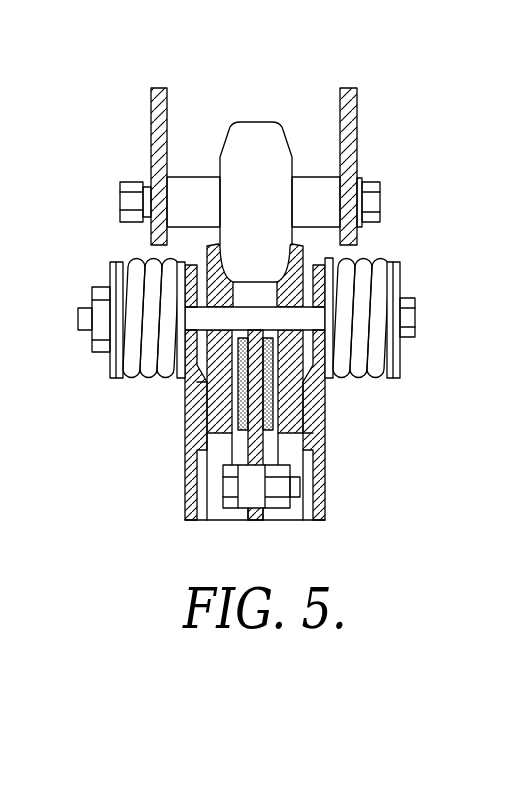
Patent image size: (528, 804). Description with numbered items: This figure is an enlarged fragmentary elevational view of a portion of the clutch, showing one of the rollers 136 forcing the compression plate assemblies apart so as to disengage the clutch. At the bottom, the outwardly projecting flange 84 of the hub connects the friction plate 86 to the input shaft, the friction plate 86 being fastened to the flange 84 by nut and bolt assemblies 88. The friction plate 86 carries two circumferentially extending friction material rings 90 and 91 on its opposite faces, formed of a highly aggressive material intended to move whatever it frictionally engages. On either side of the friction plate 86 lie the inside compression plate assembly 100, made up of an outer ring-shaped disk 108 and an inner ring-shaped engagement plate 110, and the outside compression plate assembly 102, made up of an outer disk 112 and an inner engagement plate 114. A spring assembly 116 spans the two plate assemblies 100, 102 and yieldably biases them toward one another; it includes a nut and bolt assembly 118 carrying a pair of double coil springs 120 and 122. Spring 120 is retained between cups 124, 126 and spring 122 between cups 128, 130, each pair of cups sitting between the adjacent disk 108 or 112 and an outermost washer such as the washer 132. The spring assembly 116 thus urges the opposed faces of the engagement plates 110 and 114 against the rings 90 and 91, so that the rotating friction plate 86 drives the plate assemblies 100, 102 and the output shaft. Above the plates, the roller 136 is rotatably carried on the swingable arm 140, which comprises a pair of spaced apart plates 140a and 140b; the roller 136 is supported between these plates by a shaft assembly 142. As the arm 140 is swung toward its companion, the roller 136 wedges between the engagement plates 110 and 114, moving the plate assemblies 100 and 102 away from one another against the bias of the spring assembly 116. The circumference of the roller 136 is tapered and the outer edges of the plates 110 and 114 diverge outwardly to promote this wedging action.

The swingable arm 140 is at (355, 88).
The plate 140a is at (156, 110).
The plate 140b is at (358, 107).
The shaft assembly 142 is at (360, 177).
The roller 136 is at (256, 133).
The cup 126 is at (185, 266).
The cup 128 is at (325, 264).
The double coil spring 122 is at (365, 262).
The cup 124 is at (123, 262).
The spring assembly 116 is at (392, 262).
The cup 130 is at (390, 288).
The nut and bolt assembly 118 is at (408, 320).
The outermost washer 132 is at (112, 363).
The double coil spring 120 is at (155, 382).
The outer ring-shaped disk 108 is at (192, 376).
The outer disk 112 is at (314, 396).
The inner ring-shaped engagement plate 110 is at (243, 432).
The friction material ring 91 is at (268, 432).
The outside compression plate assembly 102 is at (314, 430).
The inner engagement plate 114 is at (314, 450).
The friction material ring 90 is at (235, 458).
The outwardly projecting flange 84 is at (247, 518).
The friction plate 86 is at (260, 517).
The nut and bolt assembly 88 is at (297, 488).
The inside compression plate assembly 100 is at (185, 522).